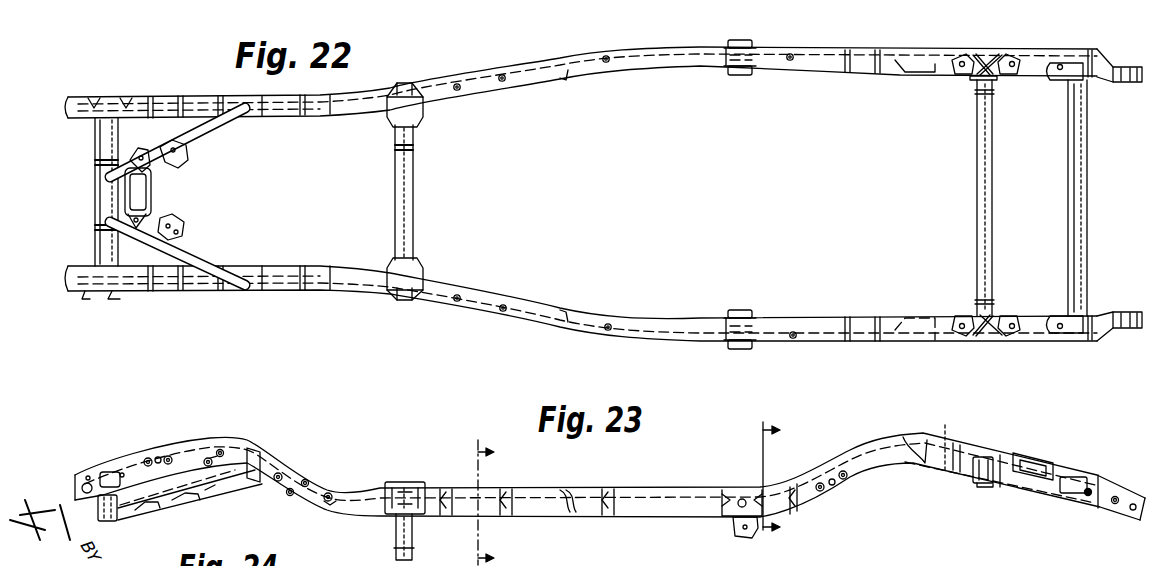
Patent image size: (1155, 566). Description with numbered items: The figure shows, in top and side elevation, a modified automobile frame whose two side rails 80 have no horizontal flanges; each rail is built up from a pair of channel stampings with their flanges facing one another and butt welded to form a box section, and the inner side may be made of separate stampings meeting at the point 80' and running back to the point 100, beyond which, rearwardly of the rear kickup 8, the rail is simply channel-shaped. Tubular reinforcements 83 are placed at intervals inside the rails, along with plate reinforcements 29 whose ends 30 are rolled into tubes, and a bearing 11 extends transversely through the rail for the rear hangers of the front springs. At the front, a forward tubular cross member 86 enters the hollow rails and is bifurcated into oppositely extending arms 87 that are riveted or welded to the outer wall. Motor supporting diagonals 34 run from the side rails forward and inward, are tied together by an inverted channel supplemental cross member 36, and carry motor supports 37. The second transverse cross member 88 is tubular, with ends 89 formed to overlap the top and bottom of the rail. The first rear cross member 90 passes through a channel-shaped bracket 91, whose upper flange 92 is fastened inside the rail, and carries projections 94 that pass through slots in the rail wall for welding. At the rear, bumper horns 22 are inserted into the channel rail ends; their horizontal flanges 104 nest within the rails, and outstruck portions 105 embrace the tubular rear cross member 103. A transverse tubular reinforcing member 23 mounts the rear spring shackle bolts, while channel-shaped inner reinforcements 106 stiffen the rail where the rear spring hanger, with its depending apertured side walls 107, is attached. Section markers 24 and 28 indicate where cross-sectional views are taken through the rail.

In FIG. 23, the rear kickup 8 is at (887, 440).
In FIG. 23, the bearing 11 is at (332, 496).
In FIG. 22, the rear bumper horn 22 is at (1106, 314).
In FIG. 23, the rear bumper horn 22 is at (1104, 474).
In FIG. 23, the transverse tubular reinforcing member 23 is at (1086, 496).
In FIG. 23, the section line 24 is at (499, 503).
In FIG. 23, the section line 28 is at (790, 480).
In FIG. 23, the reinforcements 29 is at (217, 450).
In FIG. 23, the rolled ends 30 is at (330, 492).
In FIG. 22, the motor supporting diagonals 34 is at (215, 130).
In FIG. 23, the motor supporting diagonals 34 is at (168, 502).
In FIG. 22, the supplemental cross member 36 is at (151, 193).
In FIG. 22, the motor supports 37 is at (186, 224).
In FIG. 22, the side rails 80 is at (581, 194).
In FIG. 22, the point 80' is at (565, 196).
In FIG. 23, the point 80' is at (571, 520).
In FIG. 22, the tubular reinforcements 83 is at (502, 82).
In FIG. 23, the tubular reinforcements 83 is at (452, 486).
In FIG. 22, the forward tubular cross member 86 is at (95, 192).
In FIG. 23, the forward tubular cross member 86 is at (108, 522).
In FIG. 22, the arms 87 is at (115, 292).
In FIG. 22, the second transverse cross member 88 is at (414, 185).
In FIG. 23, the second transverse cross member 88 is at (413, 545).
In FIG. 22, the ends 89 is at (420, 268).
In FIG. 23, the ends 89 is at (404, 481).
In FIG. 22, the first rear cross member 90 is at (977, 194).
In FIG. 23, the first rear cross member 90 is at (983, 488).
In FIG. 22, the bracket 91 is at (1000, 80).
In FIG. 23, the bracket 91 is at (1025, 470).
In FIG. 22, the upper flange 92 is at (975, 340).
In FIG. 22, the projections 94 is at (998, 342).
In FIG. 22, the point 100 is at (920, 318).
In FIG. 23, the point 100 is at (912, 440).
In FIG. 22, the tubular rear cross member 103 is at (1076, 193).
In FIG. 22, the horizontal flanges 104 is at (1060, 314).
In FIG. 22, the outstruck portions 105 is at (1066, 86).
In FIG. 23, the channel-shaped inner reinforcements 106 is at (740, 488).
In FIG. 22, the depending apertured side walls 107 is at (742, 76).
In FIG. 23, the depending apertured side walls 107 is at (757, 522).